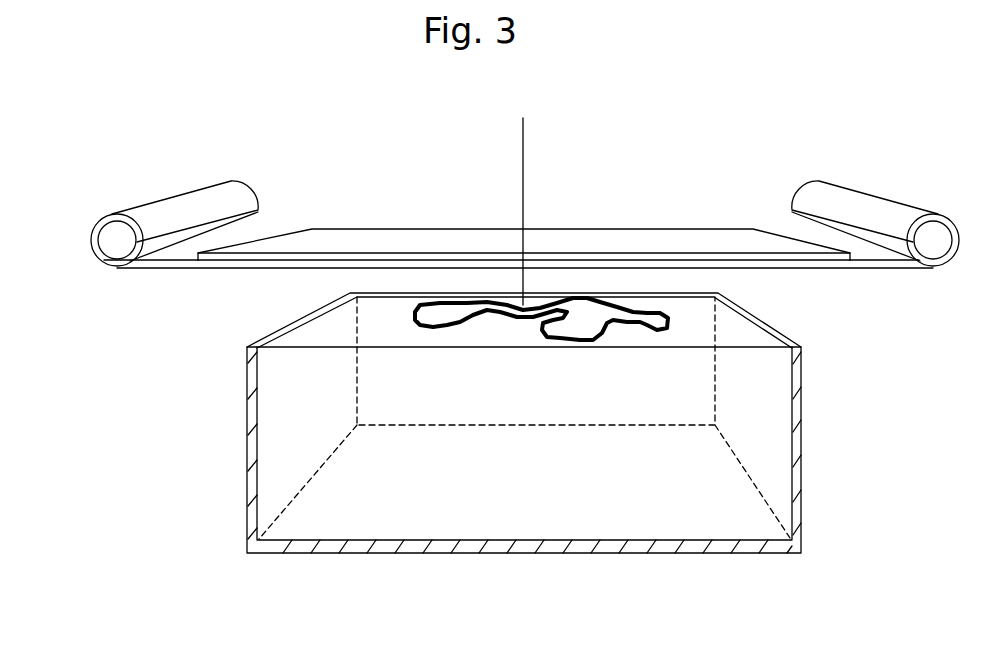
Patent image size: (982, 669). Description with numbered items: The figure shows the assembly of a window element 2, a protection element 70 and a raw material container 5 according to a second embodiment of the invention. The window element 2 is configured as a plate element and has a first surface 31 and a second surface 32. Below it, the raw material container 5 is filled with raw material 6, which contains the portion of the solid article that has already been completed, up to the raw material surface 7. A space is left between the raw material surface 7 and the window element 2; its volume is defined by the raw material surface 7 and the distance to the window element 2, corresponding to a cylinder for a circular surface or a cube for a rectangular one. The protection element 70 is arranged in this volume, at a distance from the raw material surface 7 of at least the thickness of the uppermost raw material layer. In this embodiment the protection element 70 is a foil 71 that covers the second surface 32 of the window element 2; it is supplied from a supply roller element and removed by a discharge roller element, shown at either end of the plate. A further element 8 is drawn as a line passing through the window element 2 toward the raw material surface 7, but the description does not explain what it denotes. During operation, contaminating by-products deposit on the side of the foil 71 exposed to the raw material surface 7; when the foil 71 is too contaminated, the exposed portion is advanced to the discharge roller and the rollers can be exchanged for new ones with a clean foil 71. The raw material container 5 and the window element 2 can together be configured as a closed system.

The window element 2 is at (598, 243).
The first surface 31 is at (689, 242).
The second surface 32 is at (245, 262).
The protection element 70 is at (163, 264).
The foil 71 is at (107, 213).
The dispensing nozzle / beam 8 is at (525, 157).
The raw material surface 7 is at (425, 345).
The raw material container 5 is at (798, 498).
The raw material 6 is at (372, 523).